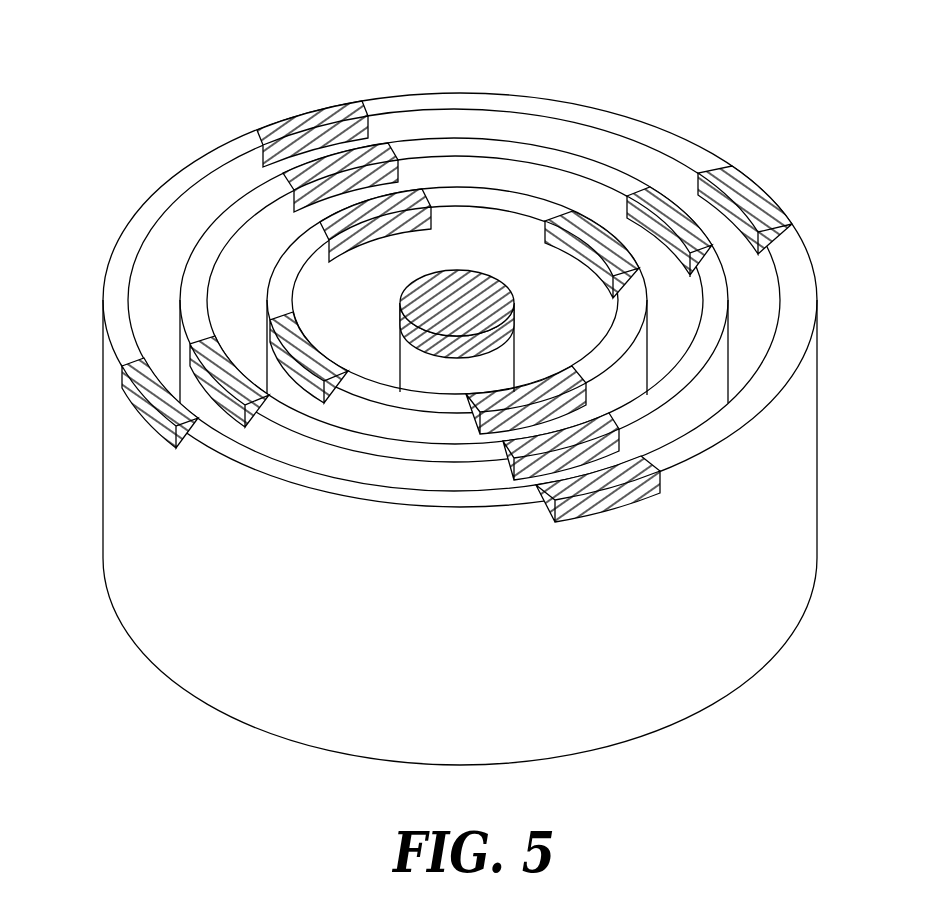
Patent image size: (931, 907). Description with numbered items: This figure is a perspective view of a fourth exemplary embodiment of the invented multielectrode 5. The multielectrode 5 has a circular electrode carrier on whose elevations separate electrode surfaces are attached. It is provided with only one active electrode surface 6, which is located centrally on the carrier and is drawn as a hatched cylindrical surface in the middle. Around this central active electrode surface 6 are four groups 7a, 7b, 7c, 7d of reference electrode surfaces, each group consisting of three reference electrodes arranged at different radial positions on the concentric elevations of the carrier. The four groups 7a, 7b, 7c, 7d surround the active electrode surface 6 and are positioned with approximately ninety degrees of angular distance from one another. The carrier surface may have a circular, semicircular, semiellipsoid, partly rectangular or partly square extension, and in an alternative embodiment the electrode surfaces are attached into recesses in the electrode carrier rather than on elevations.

The multielectrode 5 is at (130, 142).
The active electrode surface 6 is at (458, 270).
The group of reference electrode surfaces 7a is at (471, 222).
The group of reference electrode surfaces 7b is at (560, 215).
The group of reference electrode surfaces 7c is at (450, 398).
The group of reference electrode surfaces 7d is at (284, 301).